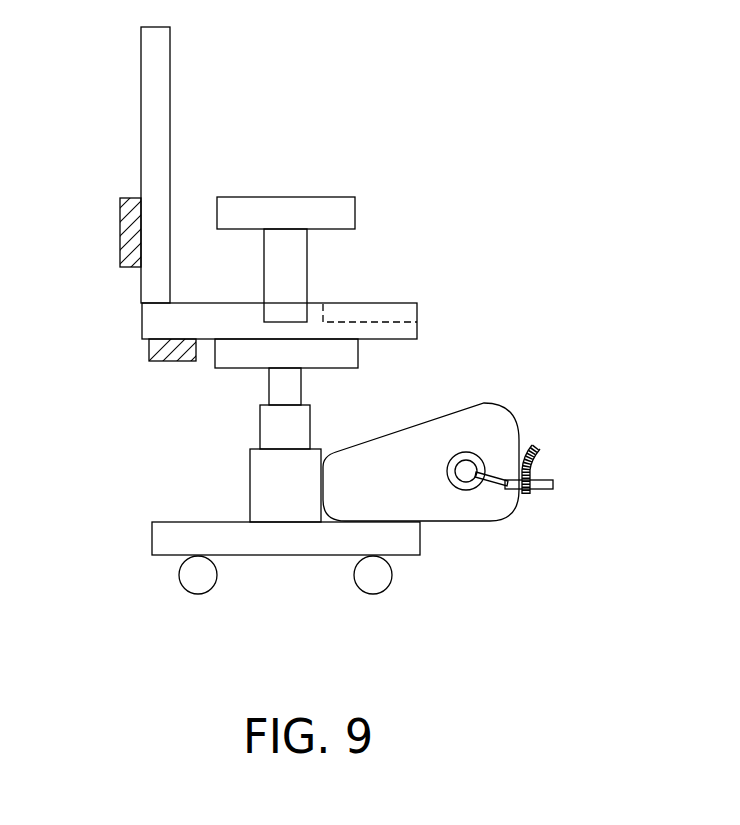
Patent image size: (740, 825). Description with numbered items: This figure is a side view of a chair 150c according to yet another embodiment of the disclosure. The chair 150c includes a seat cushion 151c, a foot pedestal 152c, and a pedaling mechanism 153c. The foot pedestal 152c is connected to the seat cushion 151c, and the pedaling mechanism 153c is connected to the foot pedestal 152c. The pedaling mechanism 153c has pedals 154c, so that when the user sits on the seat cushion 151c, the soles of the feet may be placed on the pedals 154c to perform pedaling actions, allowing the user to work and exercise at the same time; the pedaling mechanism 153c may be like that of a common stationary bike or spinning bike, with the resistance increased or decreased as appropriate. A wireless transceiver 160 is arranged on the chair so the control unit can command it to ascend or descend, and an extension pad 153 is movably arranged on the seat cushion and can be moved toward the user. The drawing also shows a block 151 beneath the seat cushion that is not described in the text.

The chair 150c is at (648, 646).
The wireless transceiver 160 is at (128, 233).
The seat cushion 151c is at (150, 325).
The mounting block 151 is at (145, 352).
The extension pad 153 is at (388, 340).
The foot pedestal 152c is at (258, 495).
The pedaling mechanism 153c is at (502, 423).
The pedals 154c is at (550, 478).